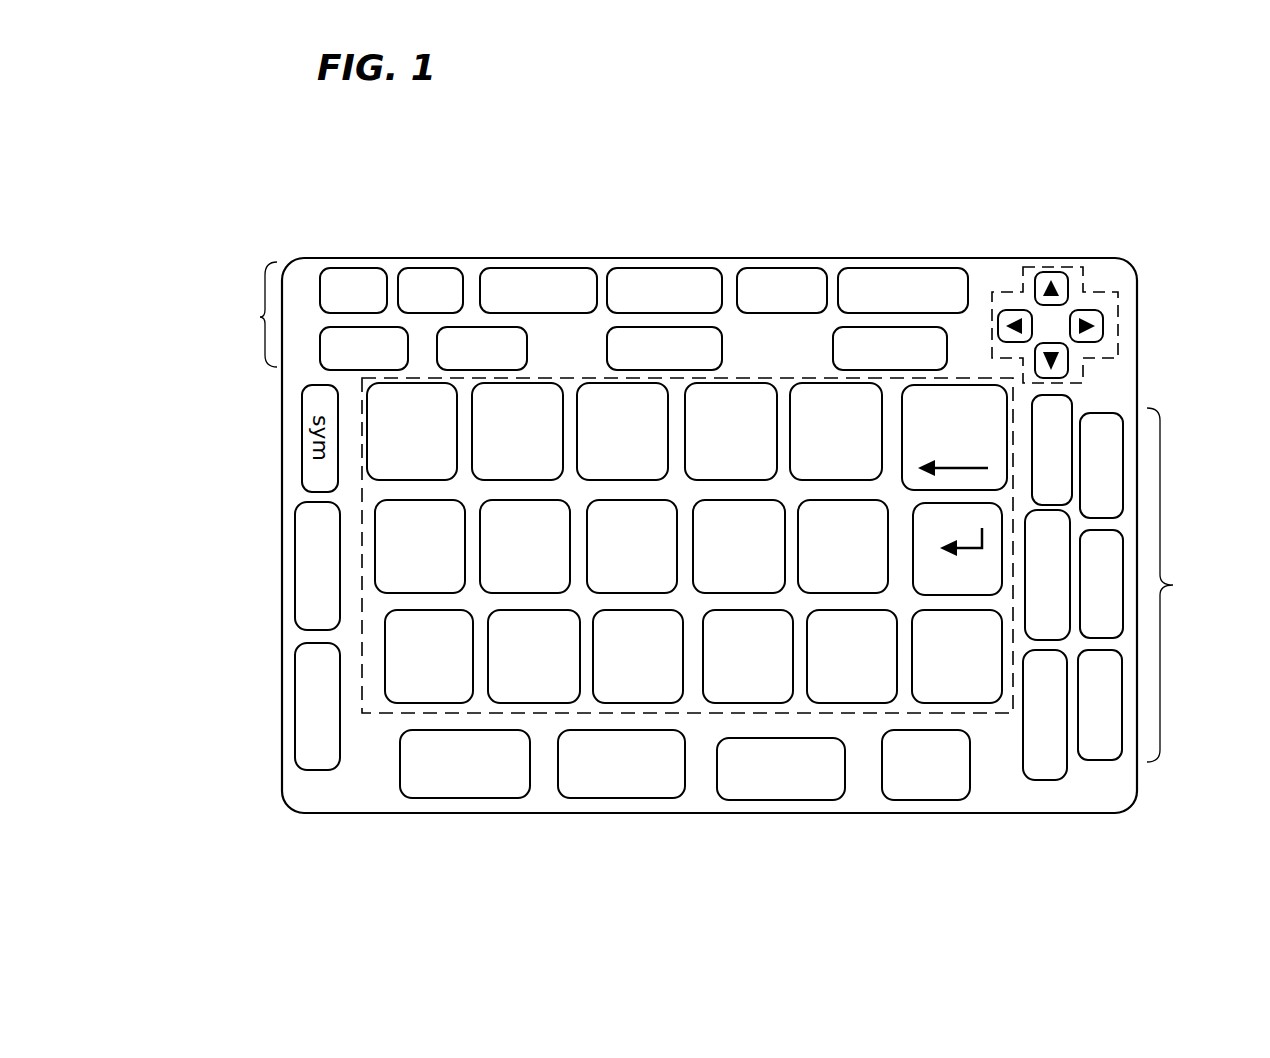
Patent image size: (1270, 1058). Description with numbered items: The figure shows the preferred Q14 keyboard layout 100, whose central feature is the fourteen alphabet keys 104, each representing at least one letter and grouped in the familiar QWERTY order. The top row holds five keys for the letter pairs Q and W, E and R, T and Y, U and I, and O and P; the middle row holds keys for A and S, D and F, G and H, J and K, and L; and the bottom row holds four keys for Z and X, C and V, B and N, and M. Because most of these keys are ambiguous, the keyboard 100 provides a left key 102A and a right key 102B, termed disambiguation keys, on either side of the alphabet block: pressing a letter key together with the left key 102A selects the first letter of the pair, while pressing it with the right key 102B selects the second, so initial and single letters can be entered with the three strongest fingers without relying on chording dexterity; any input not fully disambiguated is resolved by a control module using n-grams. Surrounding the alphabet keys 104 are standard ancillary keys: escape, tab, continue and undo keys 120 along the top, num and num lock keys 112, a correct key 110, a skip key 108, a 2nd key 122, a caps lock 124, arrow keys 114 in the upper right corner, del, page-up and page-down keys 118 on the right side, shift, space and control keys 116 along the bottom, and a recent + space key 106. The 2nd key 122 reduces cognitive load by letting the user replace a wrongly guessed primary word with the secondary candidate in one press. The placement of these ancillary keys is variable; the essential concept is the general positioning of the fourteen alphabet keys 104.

The keyboard layout 100 is at (461, 255).
The left key 102A is at (300, 542).
The right key 102B is at (300, 695).
The alphabet keys 104 is at (383, 708).
The recent + space key 106 is at (768, 788).
The skip key 108 is at (782, 268).
The correct key 110 is at (665, 333).
The num and num lock keys 112 is at (528, 268).
The arrow keys 114 is at (1045, 265).
The shift, space and control keys 116 is at (455, 787).
The del, page-up and page-down keys 118 is at (1136, 578).
The escape, tab, continue, and undo keys 120 is at (364, 316).
The 2nd key 122 is at (898, 333).
The caps lock 124 is at (868, 273).